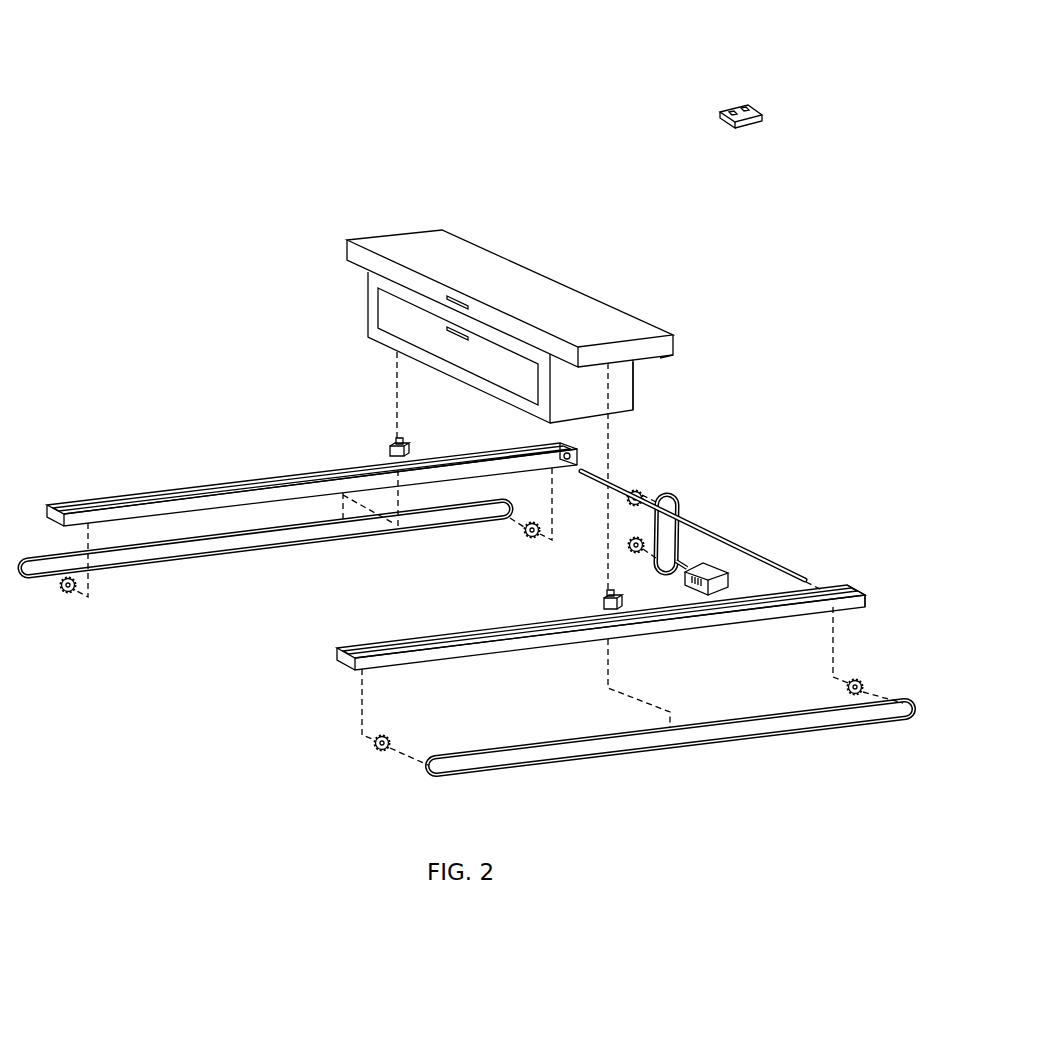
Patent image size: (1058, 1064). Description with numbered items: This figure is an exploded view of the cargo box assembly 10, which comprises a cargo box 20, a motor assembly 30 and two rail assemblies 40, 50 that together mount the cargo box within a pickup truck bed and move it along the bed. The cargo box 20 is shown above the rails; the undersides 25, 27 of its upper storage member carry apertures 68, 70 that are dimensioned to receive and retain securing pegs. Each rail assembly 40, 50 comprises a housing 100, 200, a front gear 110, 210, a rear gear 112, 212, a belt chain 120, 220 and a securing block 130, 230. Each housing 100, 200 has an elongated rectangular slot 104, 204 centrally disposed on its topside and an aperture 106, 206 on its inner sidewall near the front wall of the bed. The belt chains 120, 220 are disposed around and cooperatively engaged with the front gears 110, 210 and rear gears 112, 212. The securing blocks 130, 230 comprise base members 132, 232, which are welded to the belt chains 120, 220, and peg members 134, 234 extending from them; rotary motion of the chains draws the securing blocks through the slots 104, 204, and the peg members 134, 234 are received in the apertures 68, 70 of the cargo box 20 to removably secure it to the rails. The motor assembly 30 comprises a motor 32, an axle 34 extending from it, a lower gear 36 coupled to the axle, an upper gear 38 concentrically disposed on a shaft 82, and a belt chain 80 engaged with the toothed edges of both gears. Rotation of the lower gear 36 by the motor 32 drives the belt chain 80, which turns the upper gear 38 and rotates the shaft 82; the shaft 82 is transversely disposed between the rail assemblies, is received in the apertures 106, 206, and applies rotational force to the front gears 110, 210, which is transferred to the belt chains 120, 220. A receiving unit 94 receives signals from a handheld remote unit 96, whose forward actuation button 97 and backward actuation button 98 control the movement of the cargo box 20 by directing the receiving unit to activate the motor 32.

The cargo box assembly 10 is at (211, 182).
The cargo box 20 is at (524, 325).
The underside 25 is at (350, 268).
The aperture 68 is at (360, 270).
The underside 27 is at (660, 360).
The aperture 70 is at (623, 368).
The motor assembly 30 is at (833, 391).
The rail assembly 40 is at (122, 684).
The rail assembly 50 is at (785, 811).
The remote unit 96 is at (731, 120).
The forward actuation button 97 is at (745, 105).
The backward actuation button 98 is at (730, 110).
The housing 100 is at (370, 472).
The slot 104 is at (123, 500).
The aperture 106 is at (577, 462).
The front gear 110 is at (523, 527).
The rear gear 112 is at (62, 593).
The belt chain 120 is at (112, 570).
The securing block 130 is at (385, 404).
The base member 132 is at (390, 450).
The peg member 134 is at (393, 440).
The housing 200 is at (556, 599).
The slot 204 is at (373, 643).
The aperture 206 is at (840, 587).
The front gear 210 is at (858, 680).
The rear gear 212 is at (375, 752).
The belt chain 220 is at (427, 766).
The securing block 230 is at (603, 607).
The base member 232 is at (540, 492).
The peg member 234 is at (608, 592).
The motor 32 is at (770, 532).
The axle 34 is at (705, 568).
The lower gear 36 is at (682, 553).
The upper gear 38 is at (643, 490).
The belt chain 80 is at (672, 502).
The shaft 82 is at (611, 486).
The receiving unit 94 is at (701, 514).